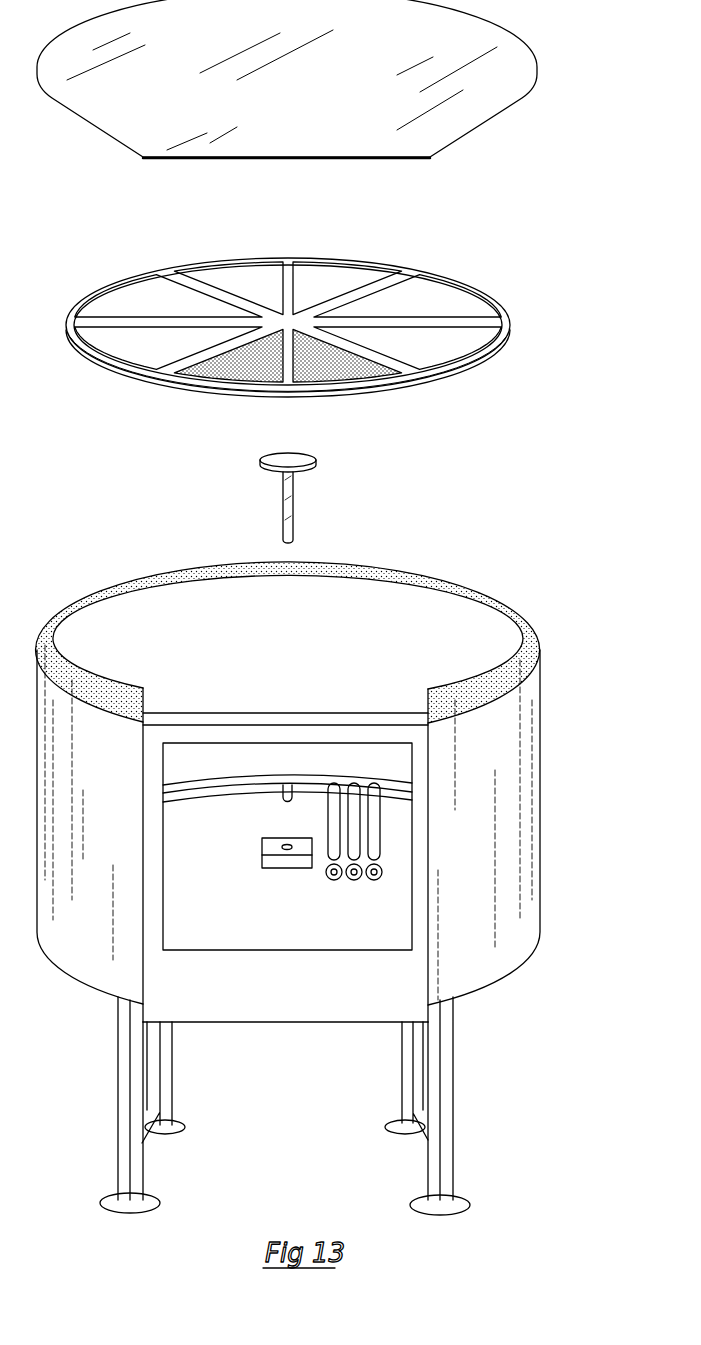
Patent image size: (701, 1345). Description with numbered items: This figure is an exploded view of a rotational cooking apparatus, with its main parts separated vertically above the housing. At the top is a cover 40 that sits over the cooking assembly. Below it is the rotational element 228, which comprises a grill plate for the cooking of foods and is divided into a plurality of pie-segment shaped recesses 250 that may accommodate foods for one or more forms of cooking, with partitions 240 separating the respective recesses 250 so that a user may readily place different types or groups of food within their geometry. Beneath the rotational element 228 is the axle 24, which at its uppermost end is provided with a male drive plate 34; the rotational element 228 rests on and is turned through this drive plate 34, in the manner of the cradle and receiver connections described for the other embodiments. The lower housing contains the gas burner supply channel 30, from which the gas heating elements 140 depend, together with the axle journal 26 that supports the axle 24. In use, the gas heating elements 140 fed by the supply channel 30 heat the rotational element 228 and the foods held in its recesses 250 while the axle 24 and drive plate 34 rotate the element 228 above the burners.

The glass top 40 is at (520, 58).
The partitions 240 is at (390, 282).
The pie-segment shaped recesses 250 is at (450, 310).
The rotational element 228 is at (480, 352).
The male drive plate 34 is at (317, 463).
The axle 24 is at (293, 528).
The gas burner supply channel 30 is at (408, 790).
The gas heating elements 140 is at (380, 855).
The axle journal 26 is at (307, 867).